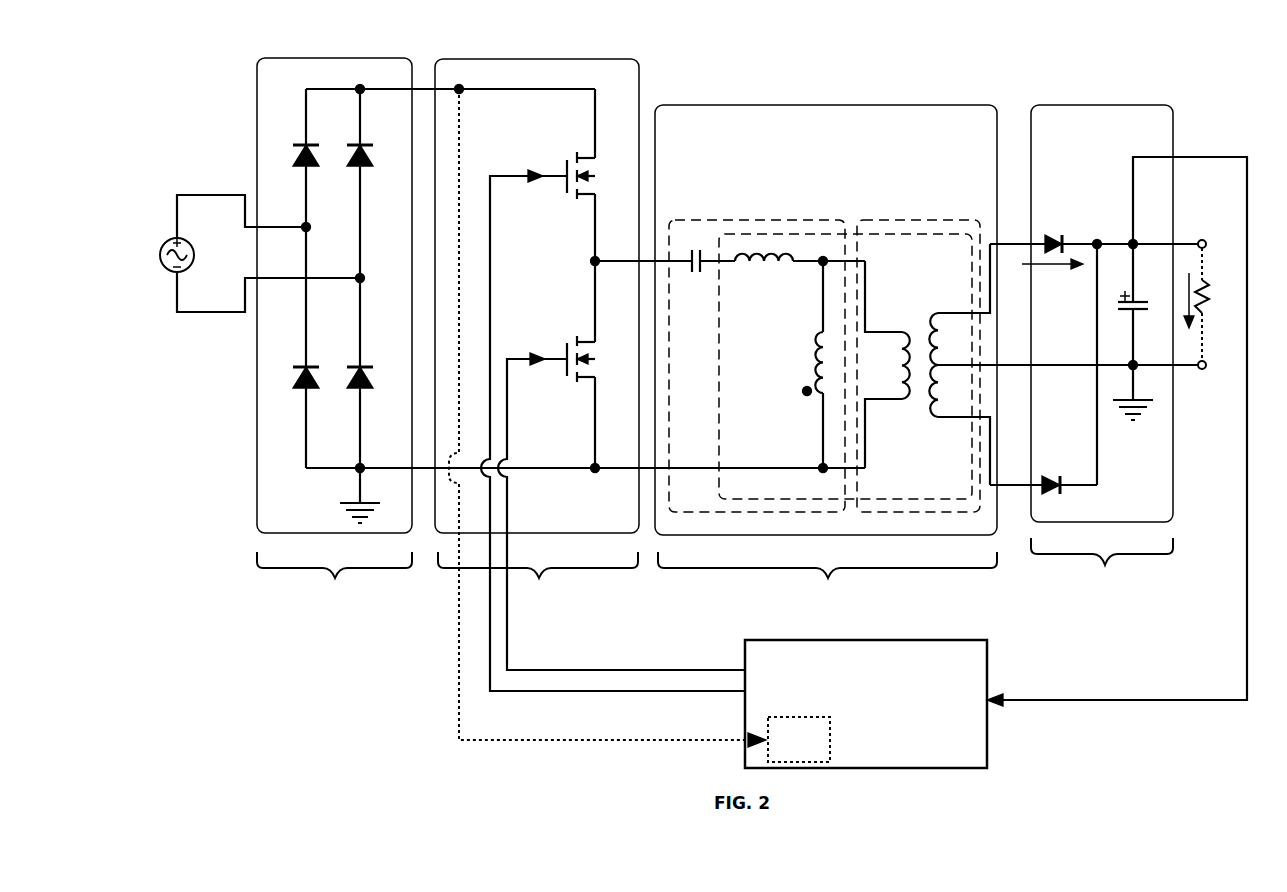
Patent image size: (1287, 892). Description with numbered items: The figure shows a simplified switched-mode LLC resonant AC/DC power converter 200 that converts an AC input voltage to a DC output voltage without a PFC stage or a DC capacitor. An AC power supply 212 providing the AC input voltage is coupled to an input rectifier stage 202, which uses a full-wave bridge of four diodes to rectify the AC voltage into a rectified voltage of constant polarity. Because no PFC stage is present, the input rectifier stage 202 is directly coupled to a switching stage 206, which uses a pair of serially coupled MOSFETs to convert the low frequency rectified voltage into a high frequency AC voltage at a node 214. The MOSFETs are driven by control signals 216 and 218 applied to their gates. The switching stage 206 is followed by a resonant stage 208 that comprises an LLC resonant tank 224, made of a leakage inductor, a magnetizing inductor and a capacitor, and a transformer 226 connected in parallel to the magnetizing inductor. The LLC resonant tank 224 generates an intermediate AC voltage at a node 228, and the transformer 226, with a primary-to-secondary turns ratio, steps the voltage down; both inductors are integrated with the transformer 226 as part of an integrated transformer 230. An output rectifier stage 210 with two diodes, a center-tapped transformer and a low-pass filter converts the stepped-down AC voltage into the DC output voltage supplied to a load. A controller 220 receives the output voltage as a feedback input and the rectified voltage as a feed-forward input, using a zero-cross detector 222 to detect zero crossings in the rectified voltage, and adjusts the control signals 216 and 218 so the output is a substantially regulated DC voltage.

The switched-mode LLC resonant AC/DC power converter 200 is at (860, 30).
The input rectifier stage 202 is at (334, 353).
The switching stage 206 is at (537, 353).
The resonant stage 208 is at (826, 365).
The output rectifier stage 210 is at (1092, 405).
The AC power supply 212 is at (151, 213).
The node 214 is at (592, 261).
The control signal 216 is at (495, 175).
The control signal 218 is at (517, 357).
The controller 220 is at (866, 704).
The zero-cross detector (ZCD) 222 is at (639, 425).
The LLC resonant tank 224 is at (669, 220).
The transformer 226 is at (857, 223).
The node 228 is at (820, 264).
The integrated transformer 230 is at (817, 233).